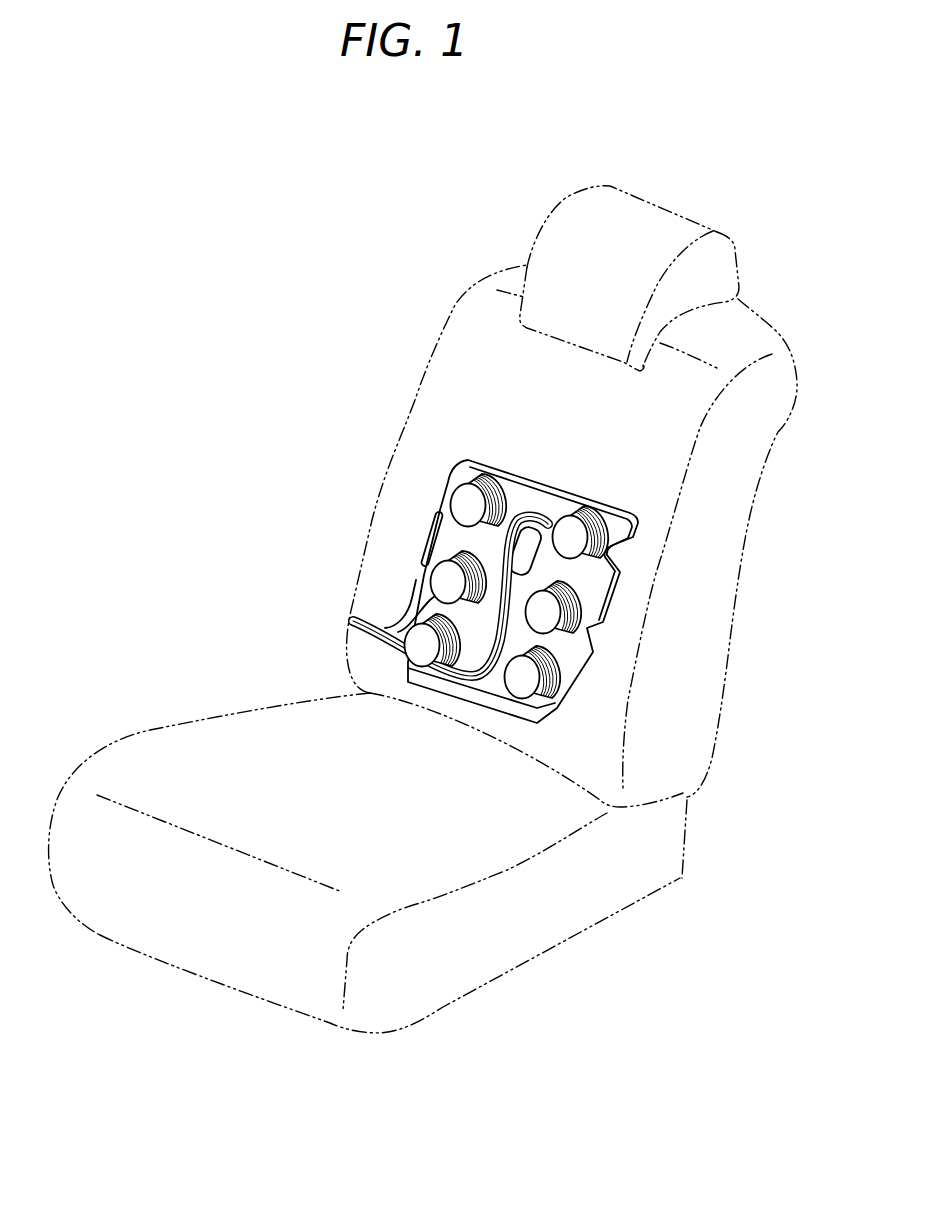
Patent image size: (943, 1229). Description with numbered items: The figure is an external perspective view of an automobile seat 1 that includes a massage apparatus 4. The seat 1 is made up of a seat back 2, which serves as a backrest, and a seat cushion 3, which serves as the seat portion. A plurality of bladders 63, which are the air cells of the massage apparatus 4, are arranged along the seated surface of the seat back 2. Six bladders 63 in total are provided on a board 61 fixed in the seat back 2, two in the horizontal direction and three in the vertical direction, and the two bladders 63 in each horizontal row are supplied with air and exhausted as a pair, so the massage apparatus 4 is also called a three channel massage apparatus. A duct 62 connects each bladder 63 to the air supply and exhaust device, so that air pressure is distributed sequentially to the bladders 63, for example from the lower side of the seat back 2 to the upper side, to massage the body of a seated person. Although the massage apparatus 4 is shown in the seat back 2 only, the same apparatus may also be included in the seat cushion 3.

The seat 1 is at (367, 263).
The seat back 2 is at (413, 390).
The seat cushion 3 is at (150, 747).
The massage apparatus 4 is at (590, 474).
The board 61 is at (540, 500).
The duct 62 is at (363, 621).
The bladder 63 is at (468, 505).